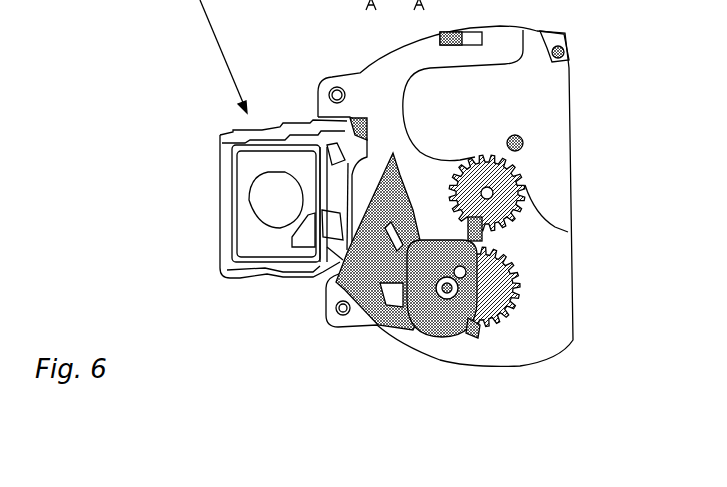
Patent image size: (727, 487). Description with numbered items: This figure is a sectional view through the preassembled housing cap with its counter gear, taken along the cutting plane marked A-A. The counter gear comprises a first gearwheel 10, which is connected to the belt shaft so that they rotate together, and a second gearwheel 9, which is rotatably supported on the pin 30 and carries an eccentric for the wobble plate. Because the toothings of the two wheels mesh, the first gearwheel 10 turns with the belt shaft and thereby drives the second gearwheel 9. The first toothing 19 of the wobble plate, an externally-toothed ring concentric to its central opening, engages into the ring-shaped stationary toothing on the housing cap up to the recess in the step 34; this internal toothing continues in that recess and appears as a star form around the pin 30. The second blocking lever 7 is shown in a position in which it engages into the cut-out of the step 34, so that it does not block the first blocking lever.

The second blocking lever 7 is at (340, 287).
The second gearwheel 9 is at (505, 297).
The first gearwheel 10 is at (493, 193).
The first toothing 19 is at (447, 290).
The pin 30 is at (473, 330).
The step 34 is at (413, 328).